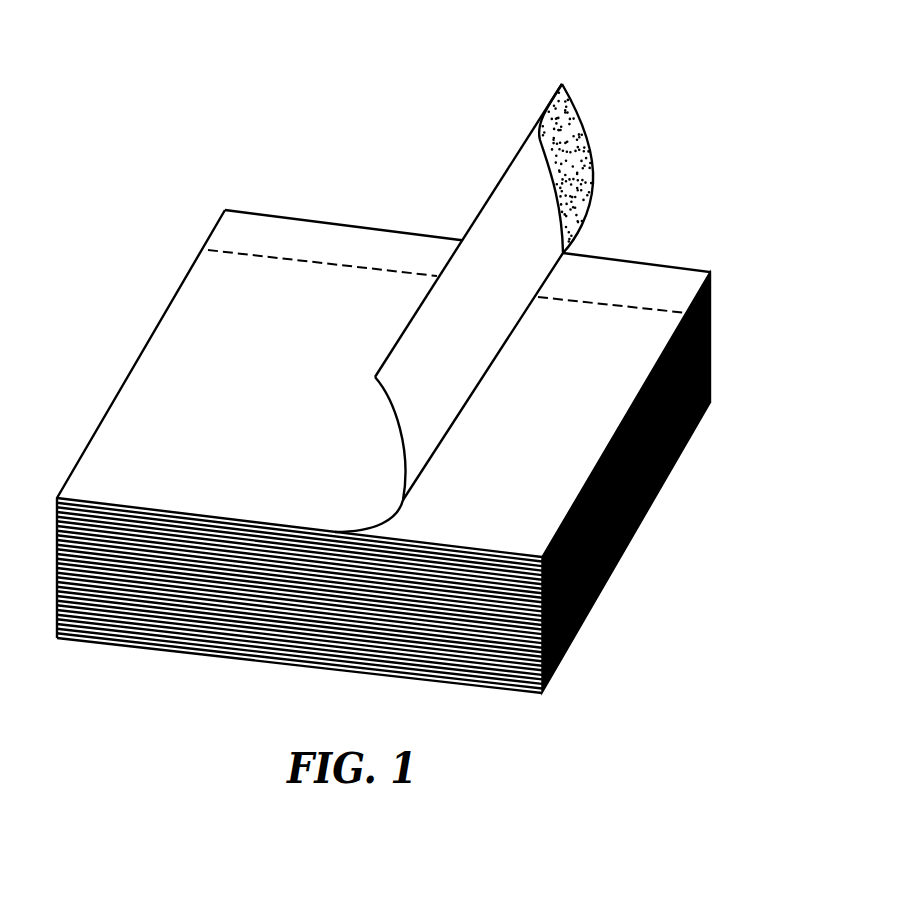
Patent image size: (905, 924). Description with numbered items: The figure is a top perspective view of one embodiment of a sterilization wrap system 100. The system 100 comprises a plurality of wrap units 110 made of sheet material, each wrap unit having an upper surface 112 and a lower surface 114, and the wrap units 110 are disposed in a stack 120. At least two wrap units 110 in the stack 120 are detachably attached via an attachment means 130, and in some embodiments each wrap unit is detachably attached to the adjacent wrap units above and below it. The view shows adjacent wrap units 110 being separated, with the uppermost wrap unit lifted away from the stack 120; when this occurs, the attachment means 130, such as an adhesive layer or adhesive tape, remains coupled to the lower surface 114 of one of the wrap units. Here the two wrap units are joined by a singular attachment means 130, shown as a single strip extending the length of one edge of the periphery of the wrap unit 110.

The sterilization wrap system 100 is at (345, 75).
The wrap unit 110 is at (477, 214).
The upper surface 112 is at (143, 382).
The lower surface 114 is at (517, 177).
The stack 120 is at (720, 268).
The attachment means 130 is at (568, 150).